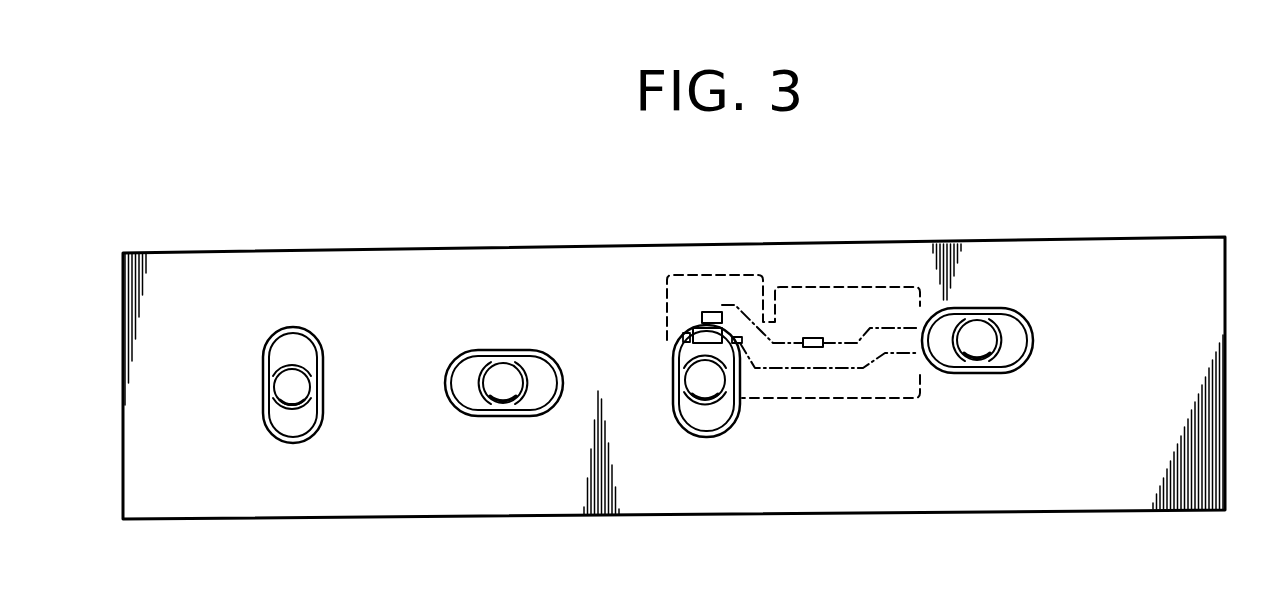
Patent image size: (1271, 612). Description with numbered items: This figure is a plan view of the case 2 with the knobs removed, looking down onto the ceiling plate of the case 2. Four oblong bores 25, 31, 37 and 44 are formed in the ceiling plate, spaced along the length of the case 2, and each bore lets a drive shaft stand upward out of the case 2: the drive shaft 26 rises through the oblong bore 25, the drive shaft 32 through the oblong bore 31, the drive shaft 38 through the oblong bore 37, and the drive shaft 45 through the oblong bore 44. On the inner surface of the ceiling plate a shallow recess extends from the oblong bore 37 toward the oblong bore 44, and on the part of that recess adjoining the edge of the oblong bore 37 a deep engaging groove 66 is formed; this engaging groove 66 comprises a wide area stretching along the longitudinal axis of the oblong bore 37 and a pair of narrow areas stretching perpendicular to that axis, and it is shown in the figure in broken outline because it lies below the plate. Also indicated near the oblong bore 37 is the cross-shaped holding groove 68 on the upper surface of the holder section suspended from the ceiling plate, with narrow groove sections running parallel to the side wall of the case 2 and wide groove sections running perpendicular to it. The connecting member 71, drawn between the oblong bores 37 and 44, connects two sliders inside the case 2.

The case 2 is at (1113, 267).
The oblong bore 25 is at (288, 338).
The drive shaft 26 is at (306, 372).
The oblong bore 31 is at (467, 367).
The drive shaft 32 is at (503, 370).
The oblong bore 37 is at (705, 418).
The drive shaft 38 is at (717, 403).
The oblong bore 44 is at (950, 320).
The drive shaft 45 is at (980, 330).
The engaging groove 66 is at (727, 275).
The holding groove 68 is at (668, 340).
The connecting member 71 is at (860, 337).